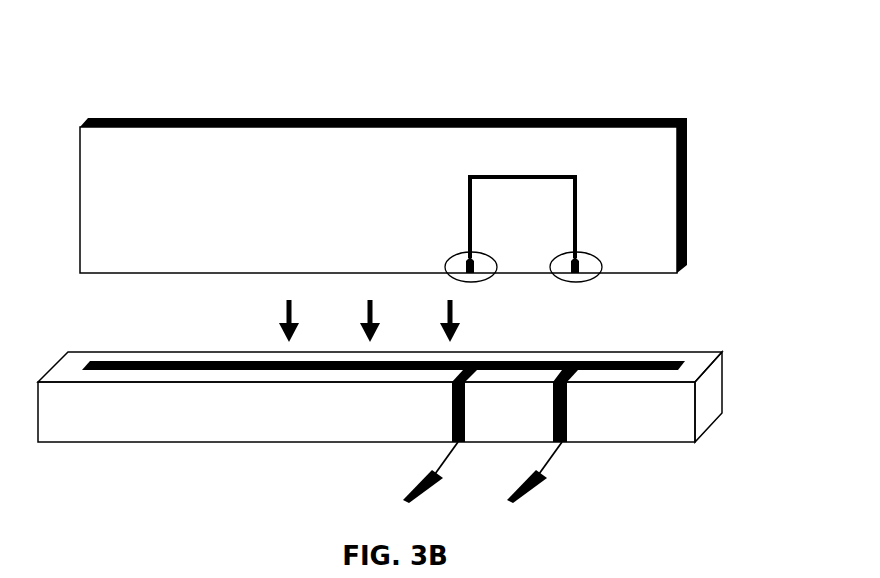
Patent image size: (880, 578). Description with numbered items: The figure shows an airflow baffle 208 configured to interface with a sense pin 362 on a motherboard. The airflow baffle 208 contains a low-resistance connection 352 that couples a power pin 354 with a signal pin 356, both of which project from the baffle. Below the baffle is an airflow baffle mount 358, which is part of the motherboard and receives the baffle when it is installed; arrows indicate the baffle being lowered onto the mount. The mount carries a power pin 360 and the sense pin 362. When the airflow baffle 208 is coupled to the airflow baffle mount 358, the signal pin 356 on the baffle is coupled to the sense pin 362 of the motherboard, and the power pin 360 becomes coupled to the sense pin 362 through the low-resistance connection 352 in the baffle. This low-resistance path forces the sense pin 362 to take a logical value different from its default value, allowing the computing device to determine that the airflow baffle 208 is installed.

The airflow baffle 208 is at (383, 195).
The low-resistance connection 352 is at (528, 177).
The power pin 354 is at (447, 258).
The signal pin 356 is at (590, 253).
The airflow baffle mount 358 is at (200, 442).
The power pin 360 is at (407, 491).
The sense pin 362 is at (520, 493).